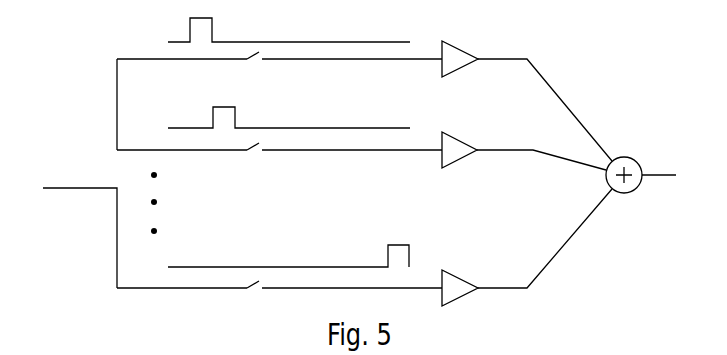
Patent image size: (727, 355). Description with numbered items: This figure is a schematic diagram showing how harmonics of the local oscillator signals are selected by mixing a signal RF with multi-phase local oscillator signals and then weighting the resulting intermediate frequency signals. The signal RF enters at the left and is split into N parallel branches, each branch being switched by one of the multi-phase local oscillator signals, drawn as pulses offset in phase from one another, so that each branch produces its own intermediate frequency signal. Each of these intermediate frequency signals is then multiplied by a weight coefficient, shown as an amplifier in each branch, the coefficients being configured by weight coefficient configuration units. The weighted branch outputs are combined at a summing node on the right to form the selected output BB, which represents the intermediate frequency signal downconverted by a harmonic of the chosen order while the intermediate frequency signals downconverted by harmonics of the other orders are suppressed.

The signal RF is at (79, 173).
The baseband output / summing node BB is at (641, 171).